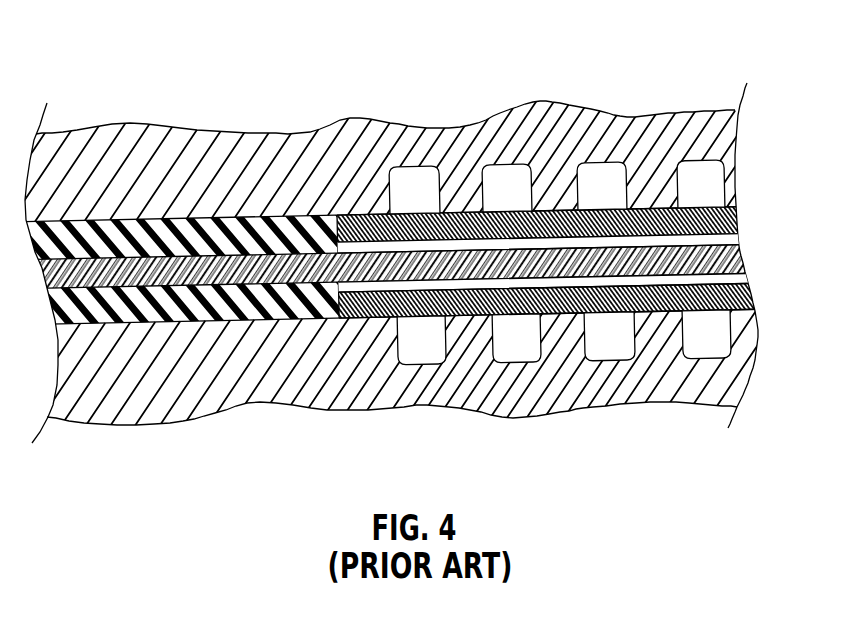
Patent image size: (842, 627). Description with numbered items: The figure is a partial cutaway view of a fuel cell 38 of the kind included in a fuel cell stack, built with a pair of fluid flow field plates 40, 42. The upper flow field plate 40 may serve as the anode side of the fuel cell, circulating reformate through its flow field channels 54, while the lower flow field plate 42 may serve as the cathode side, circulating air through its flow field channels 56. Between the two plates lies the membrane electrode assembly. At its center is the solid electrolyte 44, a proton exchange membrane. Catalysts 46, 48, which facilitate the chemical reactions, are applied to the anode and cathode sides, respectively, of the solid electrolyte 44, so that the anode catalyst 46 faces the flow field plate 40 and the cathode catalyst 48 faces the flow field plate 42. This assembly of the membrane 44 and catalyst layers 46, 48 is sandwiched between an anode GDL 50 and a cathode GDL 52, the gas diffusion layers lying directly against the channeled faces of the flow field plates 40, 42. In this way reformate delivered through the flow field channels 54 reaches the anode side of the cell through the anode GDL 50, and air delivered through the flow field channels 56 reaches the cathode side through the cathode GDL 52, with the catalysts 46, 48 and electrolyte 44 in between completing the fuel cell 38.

The fuel cell 38 is at (490, 93).
The flow field plate 40 is at (421, 138).
The flow field plate 42 is at (392, 379).
The solid electrolyte 44 is at (416, 262).
The catalyst 46 is at (574, 232).
The catalyst 48 is at (581, 286).
The anode GDL 50 is at (573, 213).
The cathode GDL 52 is at (581, 305).
The flow field channels 54 is at (585, 134).
The flow field channels 56 is at (564, 385).